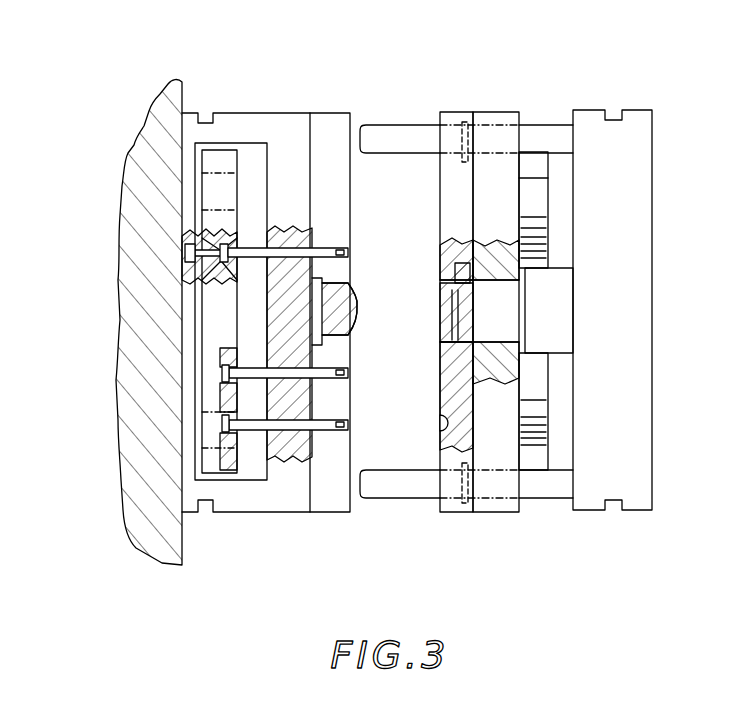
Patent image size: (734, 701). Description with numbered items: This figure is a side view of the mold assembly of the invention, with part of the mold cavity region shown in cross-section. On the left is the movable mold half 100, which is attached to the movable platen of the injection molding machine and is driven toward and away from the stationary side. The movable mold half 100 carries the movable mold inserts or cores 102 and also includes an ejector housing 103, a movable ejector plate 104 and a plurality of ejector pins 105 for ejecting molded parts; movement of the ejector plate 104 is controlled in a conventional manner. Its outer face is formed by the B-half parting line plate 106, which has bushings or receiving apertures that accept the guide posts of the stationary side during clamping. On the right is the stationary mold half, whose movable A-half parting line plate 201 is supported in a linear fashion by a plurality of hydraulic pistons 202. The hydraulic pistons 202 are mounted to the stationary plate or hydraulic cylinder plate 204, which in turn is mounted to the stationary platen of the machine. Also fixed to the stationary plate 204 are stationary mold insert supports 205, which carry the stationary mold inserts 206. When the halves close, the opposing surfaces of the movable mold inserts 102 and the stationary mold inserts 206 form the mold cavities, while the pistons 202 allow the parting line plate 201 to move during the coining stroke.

The movable mold half 100 is at (247, 100).
The movable mold inserts or cores 102 is at (334, 313).
The ejector housing 103 is at (232, 497).
The movable ejector plate 104 is at (228, 182).
The ejector pins 105 is at (262, 255).
The B-half parting line plate 106 is at (333, 140).
The movable A-half parting line plate 201 is at (450, 490).
The hydraulic pistons 202 is at (537, 192).
The stationary plate or hydraulic cylinder plate 204 is at (637, 140).
The stationary mold insert supports 205 is at (507, 317).
The stationary mold inserts 206 is at (452, 272).